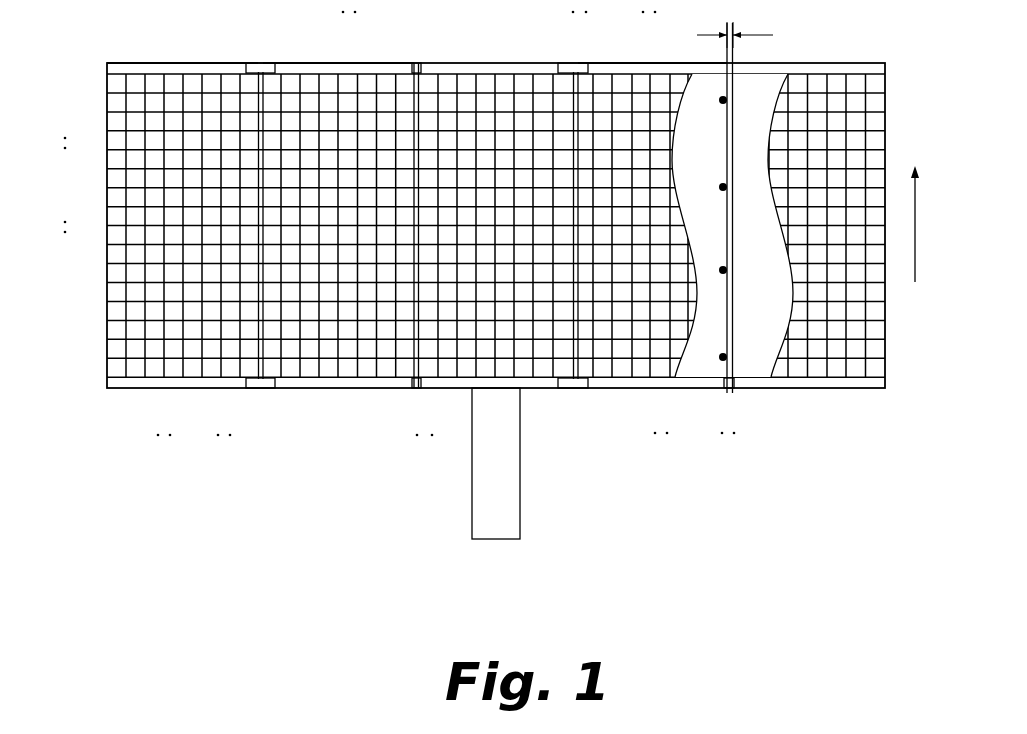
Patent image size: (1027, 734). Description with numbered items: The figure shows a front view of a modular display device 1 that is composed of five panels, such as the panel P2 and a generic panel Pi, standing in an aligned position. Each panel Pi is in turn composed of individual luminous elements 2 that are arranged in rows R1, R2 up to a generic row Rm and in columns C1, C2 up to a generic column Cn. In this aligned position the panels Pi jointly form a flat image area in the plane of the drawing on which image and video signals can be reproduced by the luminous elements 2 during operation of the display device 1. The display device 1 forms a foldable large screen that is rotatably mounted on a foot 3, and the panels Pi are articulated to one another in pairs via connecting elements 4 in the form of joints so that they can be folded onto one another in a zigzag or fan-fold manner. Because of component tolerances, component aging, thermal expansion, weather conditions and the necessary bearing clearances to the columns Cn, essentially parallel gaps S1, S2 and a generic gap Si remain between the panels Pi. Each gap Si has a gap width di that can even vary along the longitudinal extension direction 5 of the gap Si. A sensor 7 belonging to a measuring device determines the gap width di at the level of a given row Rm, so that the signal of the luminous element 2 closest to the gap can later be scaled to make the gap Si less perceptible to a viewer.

The modular display device 1 is at (815, 483).
The luminous elements 2 is at (115, 328).
The foot 3 is at (520, 490).
The connecting elements 4 is at (575, 388).
The longitudinal extension direction 5 is at (915, 244).
The sensor 7 is at (721, 185).
The panel P2 is at (190, 62).
The panel Pi is at (643, 62).
The gap width di is at (735, 28).
The row R1 is at (104, 83).
The row R2 is at (104, 103).
The row Rm is at (104, 178).
The column C1 is at (114, 382).
The column C2 is at (132, 382).
The column Cn is at (191, 382).
The gap S1 is at (263, 382).
The gap S2 is at (416, 385).
The gap Si is at (728, 382).